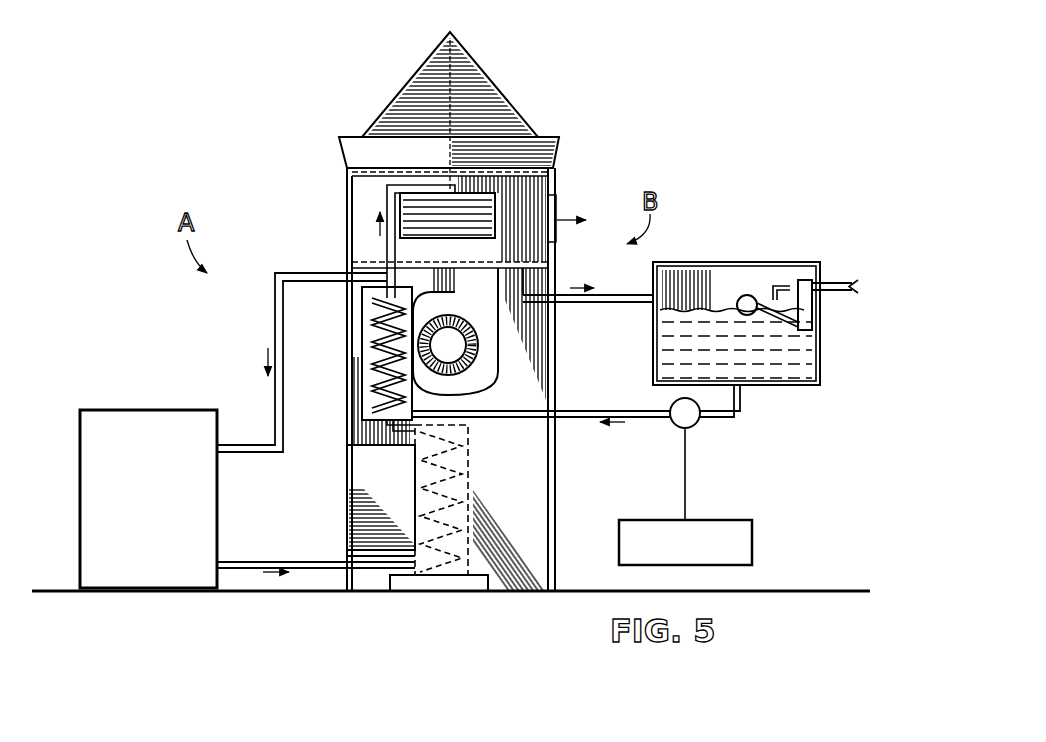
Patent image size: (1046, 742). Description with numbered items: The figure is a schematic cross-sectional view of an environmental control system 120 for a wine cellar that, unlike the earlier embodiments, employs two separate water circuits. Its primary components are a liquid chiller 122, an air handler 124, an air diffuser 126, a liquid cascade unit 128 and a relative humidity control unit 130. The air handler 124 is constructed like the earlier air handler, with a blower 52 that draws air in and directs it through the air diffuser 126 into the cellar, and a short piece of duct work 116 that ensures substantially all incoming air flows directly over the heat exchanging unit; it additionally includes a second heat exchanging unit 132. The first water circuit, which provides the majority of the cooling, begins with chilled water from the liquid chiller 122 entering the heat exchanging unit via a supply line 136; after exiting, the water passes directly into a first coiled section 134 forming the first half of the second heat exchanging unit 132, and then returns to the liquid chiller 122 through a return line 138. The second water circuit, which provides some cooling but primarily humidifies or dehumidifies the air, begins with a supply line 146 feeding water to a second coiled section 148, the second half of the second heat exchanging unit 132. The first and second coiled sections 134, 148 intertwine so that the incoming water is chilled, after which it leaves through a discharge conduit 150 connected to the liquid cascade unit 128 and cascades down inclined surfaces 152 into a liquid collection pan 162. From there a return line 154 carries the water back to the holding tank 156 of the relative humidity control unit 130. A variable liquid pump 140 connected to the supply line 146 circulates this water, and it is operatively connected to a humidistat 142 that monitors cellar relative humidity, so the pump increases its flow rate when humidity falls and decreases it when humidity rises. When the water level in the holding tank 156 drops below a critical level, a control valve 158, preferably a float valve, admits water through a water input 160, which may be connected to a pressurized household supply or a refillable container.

The blower 52 is at (472, 372).
The duct work 116 is at (392, 482).
The environmental control system 120 is at (661, 100).
The liquid chiller 122 is at (160, 522).
The air handler 124 is at (549, 537).
The air diffuser 126 is at (345, 205).
The liquid cascade unit 128 is at (505, 86).
The relative humidity control unit 130 is at (712, 258).
The second heat exchanging unit 132 is at (370, 300).
The first coiled section 134 is at (370, 335).
The supply line 136 is at (305, 561).
The return line 138 is at (260, 453).
The liquid pump 140 is at (699, 425).
The humidistat 142 is at (752, 546).
The supply line 146 is at (578, 420).
The second coiled section 148 is at (372, 397).
The discharge conduit 150 is at (400, 247).
The inclined surfaces 152 is at (415, 105).
The return line 154 is at (577, 312).
The holding tank 156 is at (820, 375).
The control valve 158 is at (814, 315).
The water input 160 is at (836, 283).
The liquid collection pan 162 is at (345, 153).